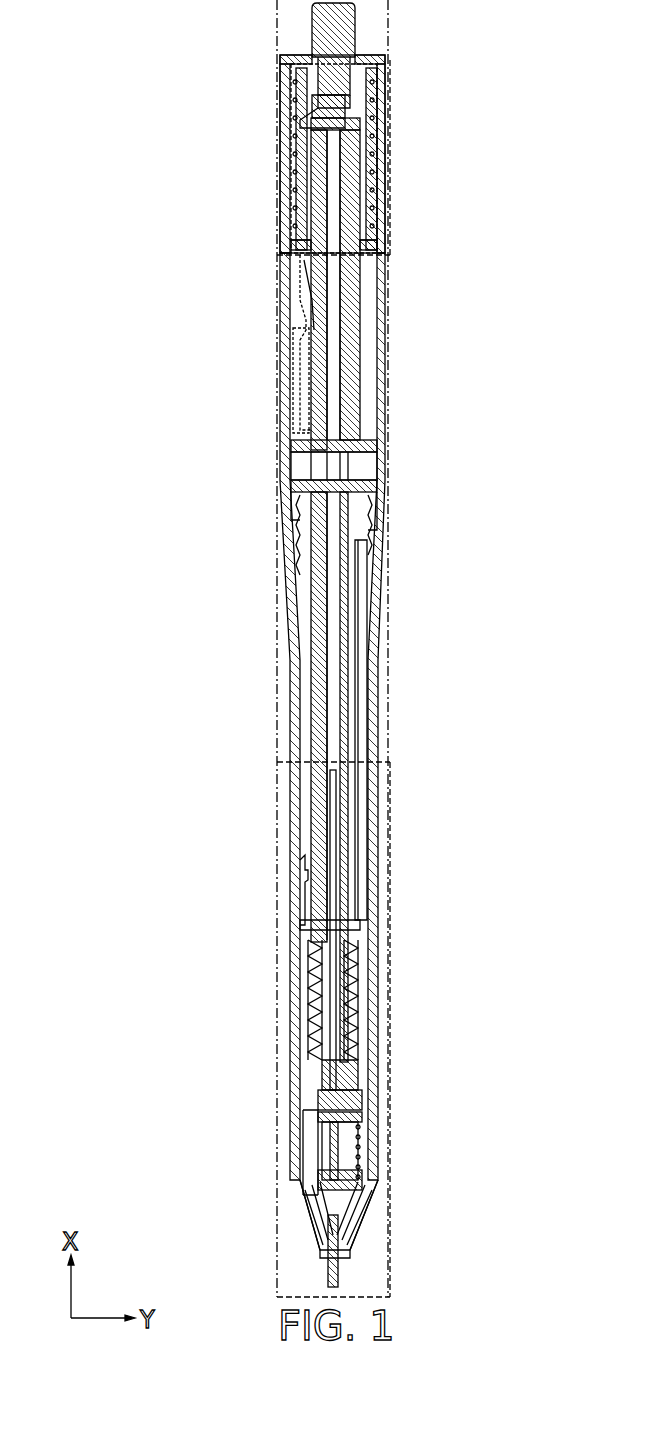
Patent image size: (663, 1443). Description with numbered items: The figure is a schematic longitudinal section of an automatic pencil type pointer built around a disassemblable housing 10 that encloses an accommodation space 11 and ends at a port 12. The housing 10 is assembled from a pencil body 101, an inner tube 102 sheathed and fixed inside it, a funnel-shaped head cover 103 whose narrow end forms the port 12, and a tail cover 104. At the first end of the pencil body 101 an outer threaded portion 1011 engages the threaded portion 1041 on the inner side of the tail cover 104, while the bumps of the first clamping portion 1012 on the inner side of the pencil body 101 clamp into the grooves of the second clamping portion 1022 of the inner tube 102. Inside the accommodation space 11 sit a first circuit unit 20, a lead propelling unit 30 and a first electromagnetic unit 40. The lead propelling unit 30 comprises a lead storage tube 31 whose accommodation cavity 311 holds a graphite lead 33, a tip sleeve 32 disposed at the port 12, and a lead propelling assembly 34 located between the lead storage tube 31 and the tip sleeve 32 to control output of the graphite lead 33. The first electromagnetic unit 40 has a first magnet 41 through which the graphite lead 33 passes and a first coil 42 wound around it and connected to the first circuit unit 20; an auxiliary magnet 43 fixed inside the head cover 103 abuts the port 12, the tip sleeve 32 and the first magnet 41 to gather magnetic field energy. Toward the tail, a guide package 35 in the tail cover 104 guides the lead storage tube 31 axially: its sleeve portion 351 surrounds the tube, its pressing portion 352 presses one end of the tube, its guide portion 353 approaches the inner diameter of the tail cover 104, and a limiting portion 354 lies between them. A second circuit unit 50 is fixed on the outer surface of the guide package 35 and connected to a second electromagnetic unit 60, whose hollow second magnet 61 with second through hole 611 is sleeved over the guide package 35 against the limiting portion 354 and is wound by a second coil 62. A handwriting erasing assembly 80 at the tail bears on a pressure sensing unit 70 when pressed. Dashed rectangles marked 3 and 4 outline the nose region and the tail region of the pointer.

The handwriting erasing assembly 80 is at (310, 38).
The cap assembly 4 is at (277, 80).
The pressure sensing unit 70 is at (333, 113).
The second through hole 611 is at (305, 152).
The second electromagnetic unit 60 is at (277, 159).
The second coil 62 is at (300, 186).
The second magnet 61 is at (300, 213).
The second circuit unit 50 is at (300, 350).
The accommodation space 11 is at (310, 470).
The first circuit unit 20 is at (300, 604).
The tip assembly 3 is at (328, 1028).
The accommodation cavity 311 is at (330, 840).
The lead storage tube 31 is at (305, 884).
The lead propelling unit 30 is at (310, 1015).
The graphite lead 33 is at (305, 1192).
The tip sleeve 32 is at (315, 1205).
The port 12 is at (330, 1250).
The pressing portion 352 is at (385, 120).
The sleeve portion 351 is at (385, 146).
The limiting portion 354 is at (385, 247).
The guide package 35 is at (401, 289).
The guide portion 353 is at (377, 452).
The first clamping portion 1012 is at (382, 492).
The second clamping portion 1022 is at (412, 506).
The threaded portion 1011 is at (382, 516).
The threaded portion 1041 is at (451, 525).
The tail cover 104 is at (382, 567).
The pencil body 101 is at (382, 605).
The inner tube 102 is at (353, 653).
The housing 10 is at (407, 716).
The lead propelling assembly 34 is at (360, 1030).
The head cover 103 is at (391, 1097).
The first coil 42 is at (375, 1158).
The first magnet 41 is at (375, 1182).
The first electromagnetic unit 40 is at (406, 1172).
The auxiliary magnet 43 is at (384, 1201).